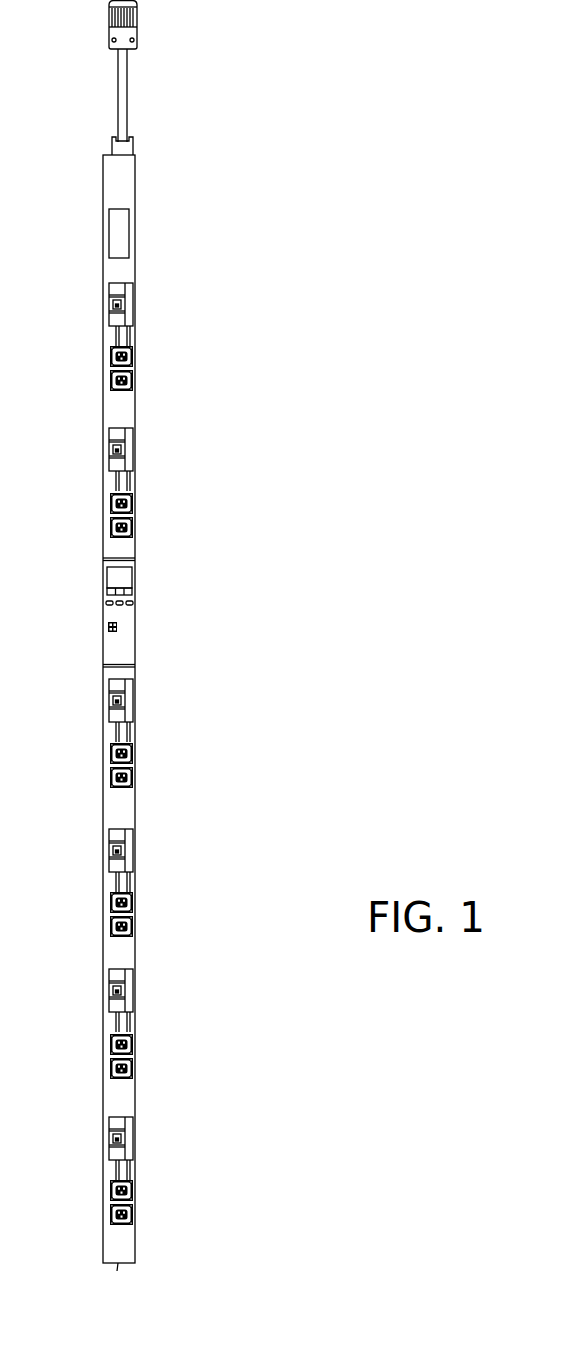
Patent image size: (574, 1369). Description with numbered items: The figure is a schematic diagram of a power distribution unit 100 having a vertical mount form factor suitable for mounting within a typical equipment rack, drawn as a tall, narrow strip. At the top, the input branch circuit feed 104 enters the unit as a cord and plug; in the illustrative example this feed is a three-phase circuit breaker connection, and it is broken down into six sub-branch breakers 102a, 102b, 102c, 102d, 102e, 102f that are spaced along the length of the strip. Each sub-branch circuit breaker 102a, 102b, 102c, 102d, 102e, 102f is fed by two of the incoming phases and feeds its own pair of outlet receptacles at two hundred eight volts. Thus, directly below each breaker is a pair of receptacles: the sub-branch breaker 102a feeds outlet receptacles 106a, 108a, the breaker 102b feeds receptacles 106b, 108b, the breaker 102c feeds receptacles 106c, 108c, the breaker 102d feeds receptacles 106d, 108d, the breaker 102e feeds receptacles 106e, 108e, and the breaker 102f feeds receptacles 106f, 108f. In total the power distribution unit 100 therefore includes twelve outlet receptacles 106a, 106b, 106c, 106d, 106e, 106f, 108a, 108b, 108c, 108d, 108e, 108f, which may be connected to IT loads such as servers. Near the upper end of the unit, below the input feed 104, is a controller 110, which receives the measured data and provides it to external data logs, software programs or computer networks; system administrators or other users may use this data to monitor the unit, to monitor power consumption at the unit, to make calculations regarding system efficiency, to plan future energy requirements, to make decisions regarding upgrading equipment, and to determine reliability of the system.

The power distribution unit 100 is at (327, 223).
The input branch circuit feed 104 is at (118, 90).
The controller 110 is at (107, 228).
The sub-branch breaker 102a is at (134, 300).
The sub-branch breaker 102b is at (134, 445).
The sub-branch breaker 102c is at (134, 696).
The sub-branch breaker 102d is at (134, 846).
The sub-branch breaker 102e is at (134, 986).
The sub-branch breaker 102f is at (134, 1134).
The outlet receptacle 106a is at (109, 355).
The outlet receptacle 106b is at (109, 502).
The outlet receptacle 106c is at (109, 752).
The outlet receptacle 106d is at (109, 901).
The outlet receptacle 106e is at (109, 1043).
The outlet receptacle 106f is at (109, 1189).
The outlet receptacle 108a is at (134, 380).
The outlet receptacle 108b is at (134, 527).
The outlet receptacle 108c is at (134, 777).
The outlet receptacle 108d is at (134, 926).
The outlet receptacle 108e is at (134, 1068).
The outlet receptacle 108f is at (134, 1214).